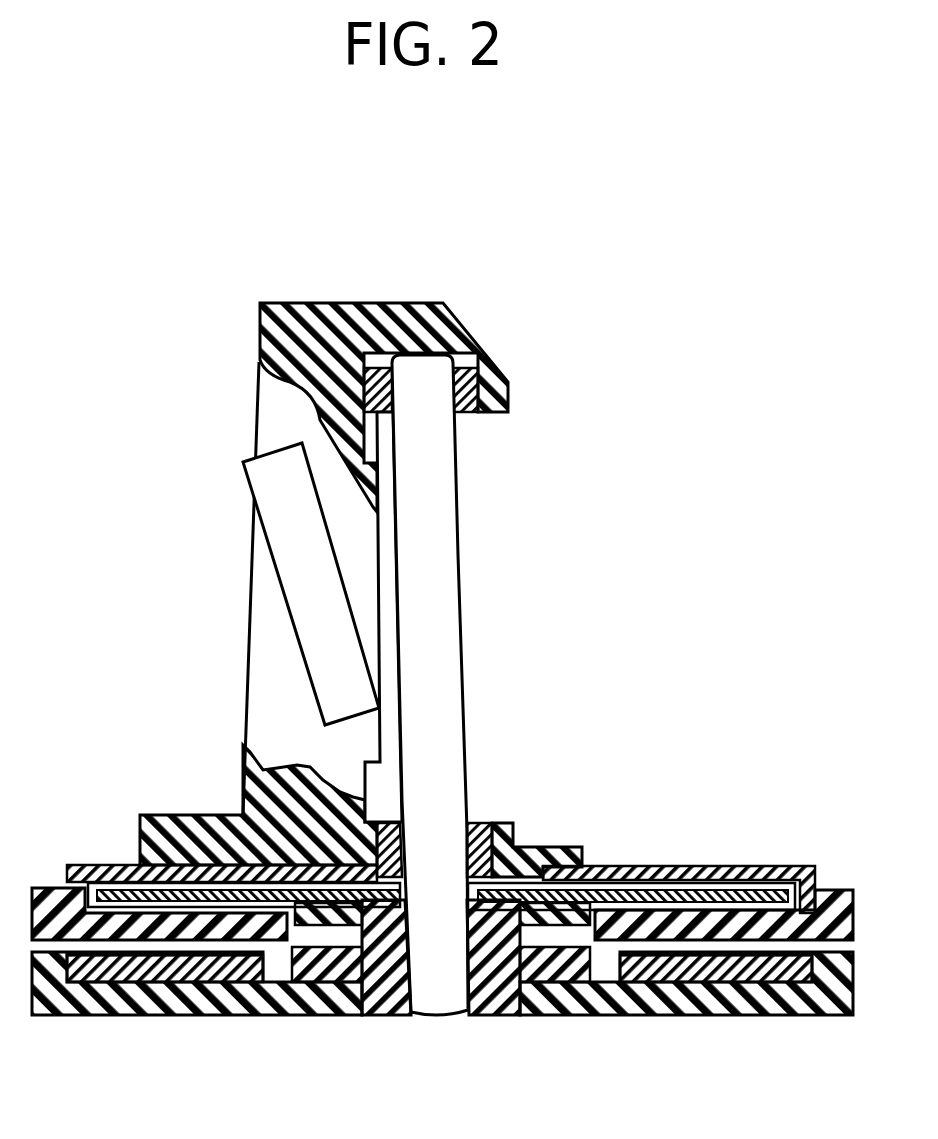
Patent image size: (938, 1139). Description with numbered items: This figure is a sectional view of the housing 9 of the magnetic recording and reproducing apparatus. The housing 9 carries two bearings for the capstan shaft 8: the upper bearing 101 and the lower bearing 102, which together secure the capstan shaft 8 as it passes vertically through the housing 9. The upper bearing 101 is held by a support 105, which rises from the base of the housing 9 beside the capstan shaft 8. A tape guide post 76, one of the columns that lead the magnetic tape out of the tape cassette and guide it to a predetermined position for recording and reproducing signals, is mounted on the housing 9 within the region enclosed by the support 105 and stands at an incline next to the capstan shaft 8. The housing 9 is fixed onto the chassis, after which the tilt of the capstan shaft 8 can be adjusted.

The housing 9 is at (292, 322).
The upper bearing 101 is at (472, 413).
The tape guide post 76 is at (310, 540).
The capstan shaft 8 is at (435, 612).
The support 105 is at (283, 718).
The bearing 102 is at (478, 827).